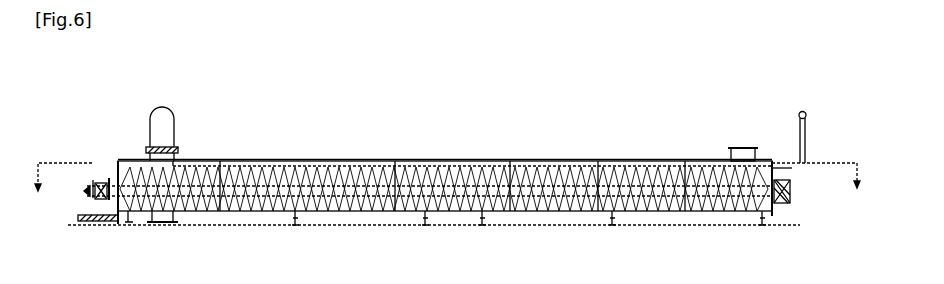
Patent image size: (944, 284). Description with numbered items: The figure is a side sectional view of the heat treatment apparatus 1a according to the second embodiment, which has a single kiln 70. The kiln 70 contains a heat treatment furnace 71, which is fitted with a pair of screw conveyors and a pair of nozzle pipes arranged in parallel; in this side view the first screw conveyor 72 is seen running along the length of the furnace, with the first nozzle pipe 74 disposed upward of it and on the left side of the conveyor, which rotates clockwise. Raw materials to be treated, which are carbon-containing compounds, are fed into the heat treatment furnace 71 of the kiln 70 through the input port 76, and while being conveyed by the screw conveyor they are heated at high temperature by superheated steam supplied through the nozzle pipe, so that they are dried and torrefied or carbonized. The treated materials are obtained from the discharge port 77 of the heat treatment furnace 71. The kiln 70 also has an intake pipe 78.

The heat treatment apparatus 1a is at (448, 159).
The kiln 70 is at (116, 142).
The heat treatment furnace 71 is at (444, 153).
The first screw conveyor 72 is at (357, 162).
The first nozzle pipe 74 is at (417, 162).
The input port 76 is at (742, 148).
The discharge port 77 is at (163, 224).
The intake pipe 78 is at (167, 132).